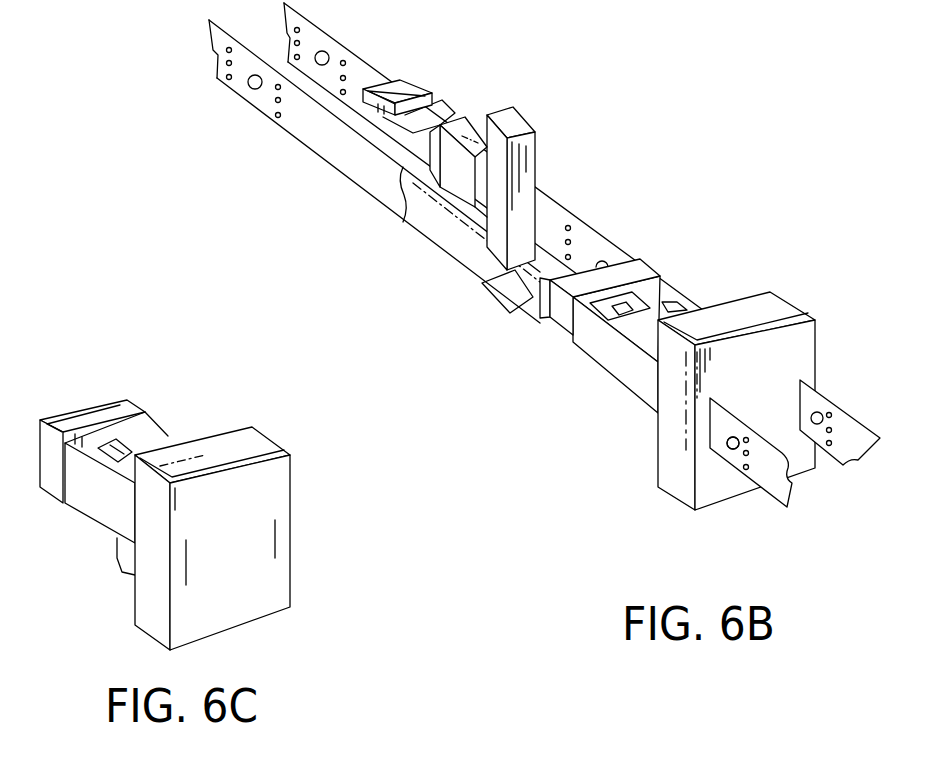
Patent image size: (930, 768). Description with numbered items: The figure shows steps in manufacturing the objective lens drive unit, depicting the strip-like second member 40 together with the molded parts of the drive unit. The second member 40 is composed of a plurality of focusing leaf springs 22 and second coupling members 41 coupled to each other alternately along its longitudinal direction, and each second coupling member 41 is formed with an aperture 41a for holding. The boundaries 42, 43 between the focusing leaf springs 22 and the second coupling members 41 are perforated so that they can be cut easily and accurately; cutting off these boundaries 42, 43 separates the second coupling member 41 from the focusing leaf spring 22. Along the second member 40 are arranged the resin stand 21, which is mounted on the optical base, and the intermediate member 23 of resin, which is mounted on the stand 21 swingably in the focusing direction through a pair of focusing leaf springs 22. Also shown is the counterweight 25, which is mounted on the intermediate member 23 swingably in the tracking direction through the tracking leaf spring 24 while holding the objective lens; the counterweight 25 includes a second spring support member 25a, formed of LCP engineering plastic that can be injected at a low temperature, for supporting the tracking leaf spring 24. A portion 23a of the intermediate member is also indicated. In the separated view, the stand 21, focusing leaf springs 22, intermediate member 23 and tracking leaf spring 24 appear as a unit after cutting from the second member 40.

In FIG. 6B, the second member 40 is at (317, 160).
In FIG. 6B, the block 23a is at (409, 88).
In FIG. 6B, the counterweight 25 is at (527, 152).
In FIG. 6B, the second spring support member 25a is at (473, 132).
In FIG. 6B, the boundary (second cut portion) 42 is at (542, 307).
In FIG. 6B, the intermediate member 23 is at (637, 270).
In FIG. 6C, the intermediate member 23 is at (77, 422).
In FIG. 6B, the focusing leaf spring 22 is at (607, 357).
In FIG. 6C, the focusing leaf spring 22 is at (97, 502).
In FIG. 6B, the stand 21 is at (768, 305).
In FIG. 6C, the stand 21 is at (257, 450).
In FIG. 6B, the second coupling member 41 is at (760, 468).
In FIG. 6B, the aperture 41a is at (737, 437).
In FIG. 6B, the boundary (second cut portion) 43 is at (820, 403).
In FIG. 6C, the tracking leaf spring 24 is at (120, 440).